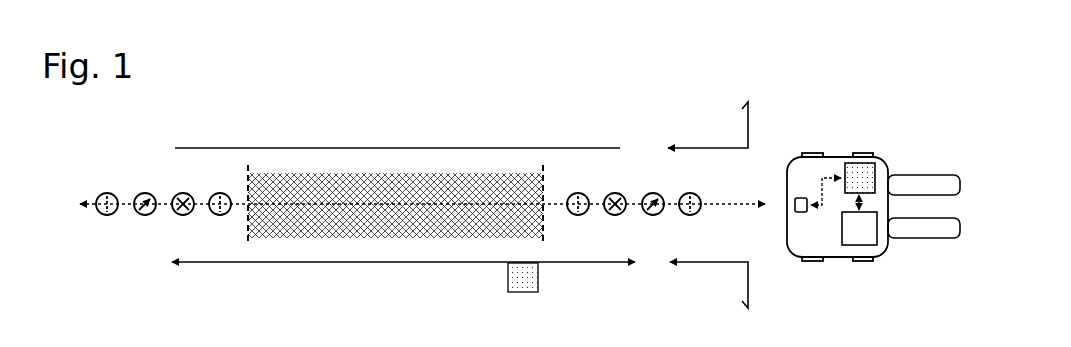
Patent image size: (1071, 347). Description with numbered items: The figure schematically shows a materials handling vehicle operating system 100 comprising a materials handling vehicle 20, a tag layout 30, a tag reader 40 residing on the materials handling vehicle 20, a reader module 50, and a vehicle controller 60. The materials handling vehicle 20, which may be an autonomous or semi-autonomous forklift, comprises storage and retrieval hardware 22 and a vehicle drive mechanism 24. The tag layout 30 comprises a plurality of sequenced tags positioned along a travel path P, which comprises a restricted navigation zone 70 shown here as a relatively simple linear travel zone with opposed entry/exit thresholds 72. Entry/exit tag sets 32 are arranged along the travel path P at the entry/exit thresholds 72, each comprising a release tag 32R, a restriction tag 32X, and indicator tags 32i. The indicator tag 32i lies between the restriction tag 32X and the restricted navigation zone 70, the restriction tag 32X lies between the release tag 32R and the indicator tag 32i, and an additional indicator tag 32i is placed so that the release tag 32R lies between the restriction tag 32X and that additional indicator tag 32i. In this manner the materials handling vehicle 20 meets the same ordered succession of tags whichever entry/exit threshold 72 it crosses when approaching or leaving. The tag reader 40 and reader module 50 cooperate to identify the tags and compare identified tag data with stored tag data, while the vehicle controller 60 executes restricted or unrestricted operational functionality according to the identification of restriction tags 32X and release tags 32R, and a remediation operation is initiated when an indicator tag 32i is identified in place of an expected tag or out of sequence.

The tag layout 30 is at (282, 77).
The materials handling vehicle operating system 100 is at (517, 105).
The restricted navigation zone 70 is at (361, 237).
The entry/exit threshold 72 is at (245, 172).
The entry/exit tag set 32 is at (232, 183).
The indicator tag 32i is at (107, 216).
The release tag 32R is at (145, 216).
The restriction tag 32X is at (183, 216).
The travel path P is at (737, 202).
The materials handling vehicle 20 is at (880, 157).
The storage and retrieval hardware 22 is at (908, 238).
The vehicle drive mechanism 24 is at (812, 262).
The tag reader 40 is at (800, 198).
The reader module 50 is at (850, 160).
The vehicle controller 60 is at (865, 257).